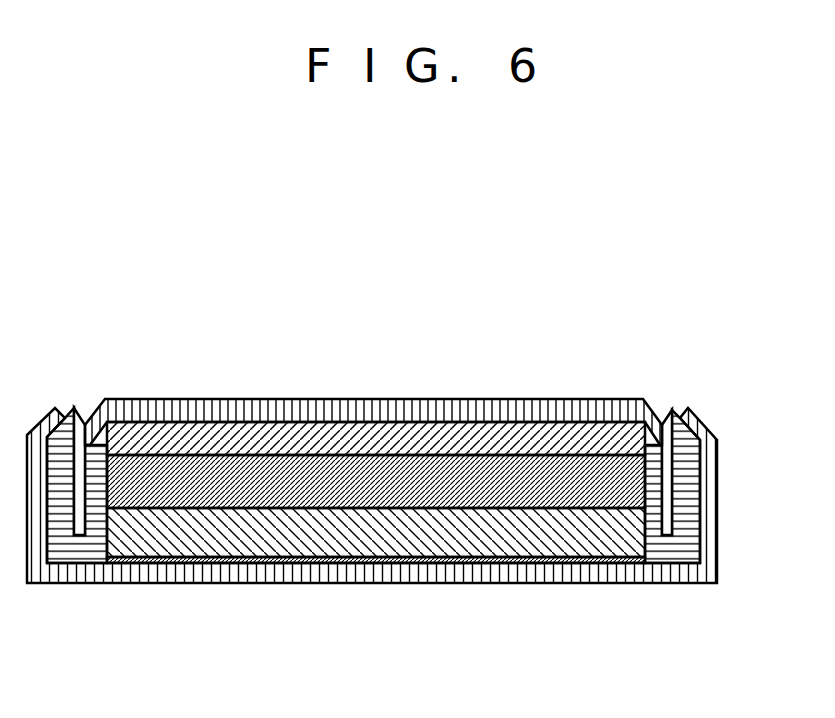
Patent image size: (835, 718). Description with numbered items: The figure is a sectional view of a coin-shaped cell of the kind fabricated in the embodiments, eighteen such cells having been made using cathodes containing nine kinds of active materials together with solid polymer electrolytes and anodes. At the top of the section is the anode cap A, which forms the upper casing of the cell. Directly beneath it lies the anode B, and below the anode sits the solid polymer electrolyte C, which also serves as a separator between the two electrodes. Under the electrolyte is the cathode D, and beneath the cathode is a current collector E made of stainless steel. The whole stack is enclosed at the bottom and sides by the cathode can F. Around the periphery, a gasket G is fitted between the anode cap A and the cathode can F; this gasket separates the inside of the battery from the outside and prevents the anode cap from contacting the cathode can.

The anode cap A is at (307, 408).
The anode B is at (338, 432).
The solid polymer electrolyte C is at (337, 485).
The cathode D is at (350, 540).
The current collector E is at (477, 562).
The cathode can F is at (695, 426).
The gasket G is at (697, 465).